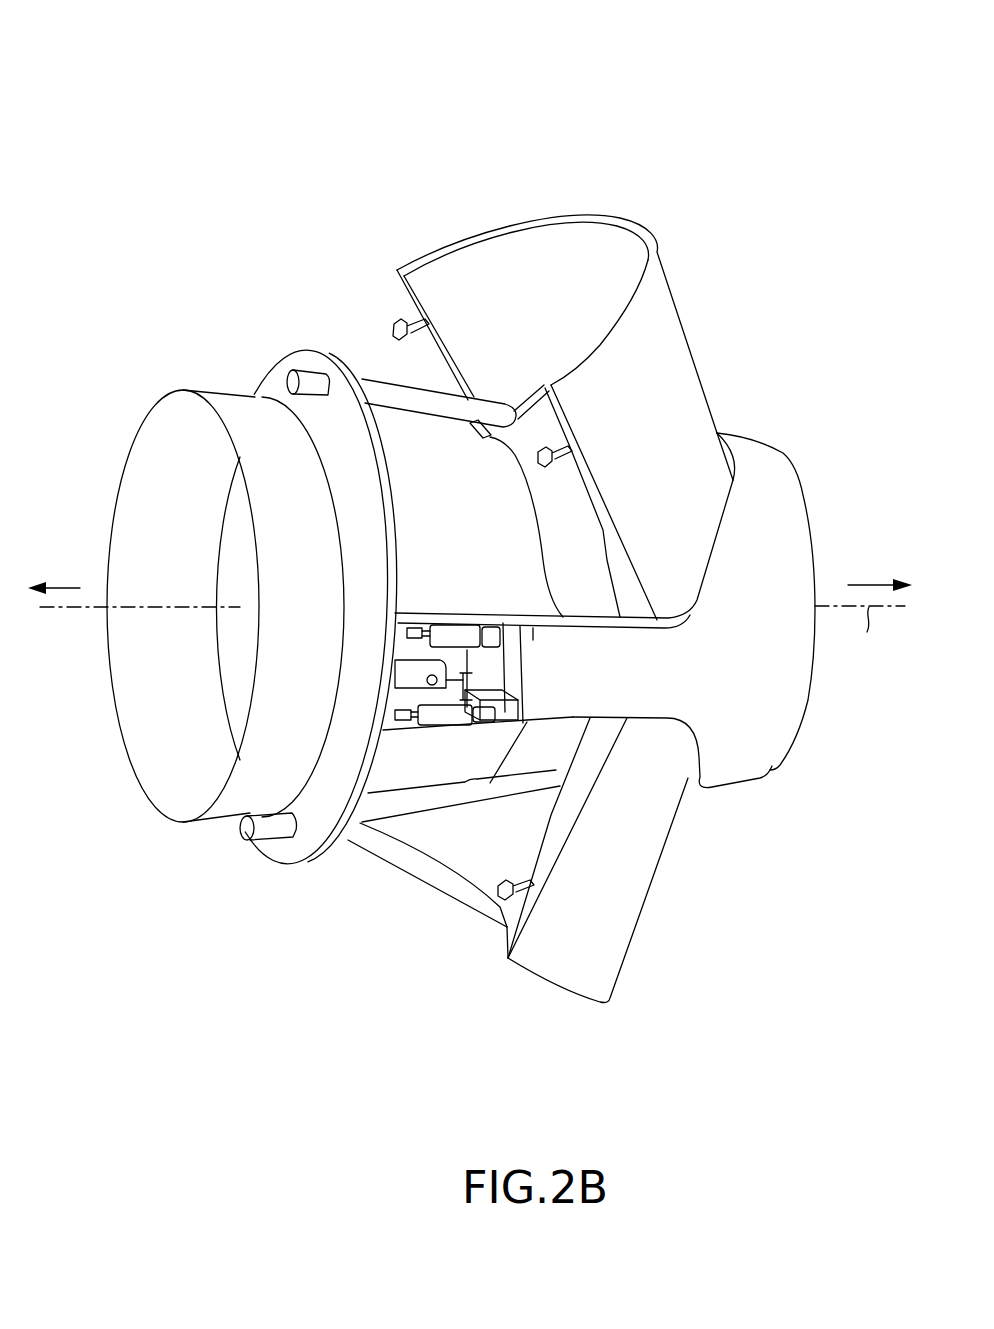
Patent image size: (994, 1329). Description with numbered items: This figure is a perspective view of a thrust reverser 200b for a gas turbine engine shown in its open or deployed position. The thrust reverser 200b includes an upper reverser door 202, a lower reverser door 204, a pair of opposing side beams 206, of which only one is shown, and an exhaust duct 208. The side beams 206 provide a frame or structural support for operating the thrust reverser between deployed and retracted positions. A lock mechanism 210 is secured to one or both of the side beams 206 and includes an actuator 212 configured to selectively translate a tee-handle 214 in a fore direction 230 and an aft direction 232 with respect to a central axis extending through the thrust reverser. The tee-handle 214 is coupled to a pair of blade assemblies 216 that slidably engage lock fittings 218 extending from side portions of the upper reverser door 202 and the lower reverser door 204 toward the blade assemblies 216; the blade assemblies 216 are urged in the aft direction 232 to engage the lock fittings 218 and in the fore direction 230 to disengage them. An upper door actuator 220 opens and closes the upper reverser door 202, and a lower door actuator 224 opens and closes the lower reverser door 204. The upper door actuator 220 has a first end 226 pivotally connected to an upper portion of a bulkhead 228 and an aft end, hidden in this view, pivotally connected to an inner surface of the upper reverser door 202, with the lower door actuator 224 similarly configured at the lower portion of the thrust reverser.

The thrust reverser 200b is at (199, 96).
The upper reverser door 202 is at (672, 290).
The lower reverser door 204 is at (643, 920).
The side beam 206 is at (560, 718).
The exhaust duct 208 is at (765, 774).
The lock mechanism 210 is at (556, 667).
The actuator 212 is at (410, 680).
The tee-handle 214 is at (520, 696).
The blade assembly 216 is at (455, 632).
The lock fitting 218 is at (406, 330).
The upper door actuator 220 is at (372, 385).
The lower door actuator 224 is at (465, 798).
The first end 226 is at (315, 385).
The bulkhead 228 is at (268, 388).
The fore direction 230 is at (78, 586).
The aft direction 232 is at (866, 585).